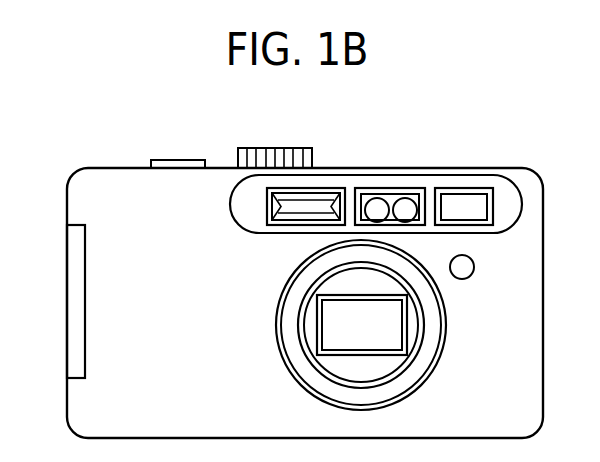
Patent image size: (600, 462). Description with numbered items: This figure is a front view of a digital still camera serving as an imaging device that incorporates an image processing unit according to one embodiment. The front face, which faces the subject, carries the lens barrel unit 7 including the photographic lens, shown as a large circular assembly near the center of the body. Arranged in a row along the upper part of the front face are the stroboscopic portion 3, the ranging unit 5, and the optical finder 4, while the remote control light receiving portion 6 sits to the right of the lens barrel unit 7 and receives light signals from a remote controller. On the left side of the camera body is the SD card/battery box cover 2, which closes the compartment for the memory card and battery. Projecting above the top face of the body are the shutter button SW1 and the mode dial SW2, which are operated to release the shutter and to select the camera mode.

The SD card/battery box cover 2 is at (74, 300).
The stroboscopic portion 3 is at (320, 200).
The optical finder 4 is at (463, 200).
The ranging unit 5 is at (390, 190).
The remote control light receiving portion 6 is at (473, 269).
The lens barrel unit 7 is at (380, 363).
The shutter button SW1 is at (185, 159).
The mode dial SW2 is at (278, 148).